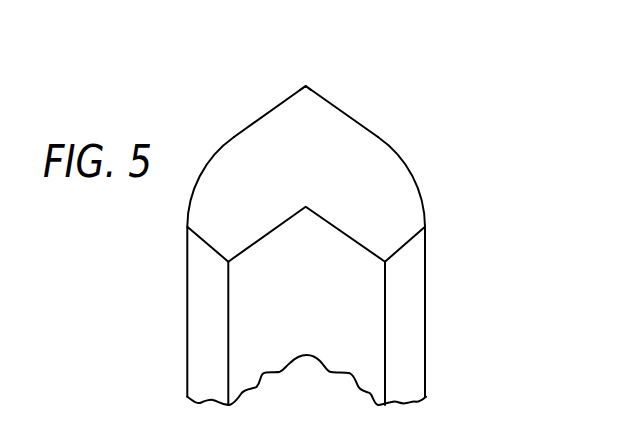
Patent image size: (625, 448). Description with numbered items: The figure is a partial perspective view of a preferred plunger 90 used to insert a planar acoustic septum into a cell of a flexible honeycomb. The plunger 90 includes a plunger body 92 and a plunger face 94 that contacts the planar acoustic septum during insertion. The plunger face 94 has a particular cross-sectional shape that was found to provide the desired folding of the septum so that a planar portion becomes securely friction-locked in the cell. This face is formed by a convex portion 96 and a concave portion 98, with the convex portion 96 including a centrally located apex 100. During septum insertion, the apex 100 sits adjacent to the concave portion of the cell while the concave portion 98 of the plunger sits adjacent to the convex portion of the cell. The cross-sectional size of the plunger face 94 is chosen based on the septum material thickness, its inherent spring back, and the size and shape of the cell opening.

The plunger 90 is at (253, 102).
The plunger body 92 is at (408, 288).
The plunger face 94 is at (377, 170).
The convex portion 96 is at (343, 112).
The concave portion 98 is at (272, 222).
The apex 100 is at (306, 86).